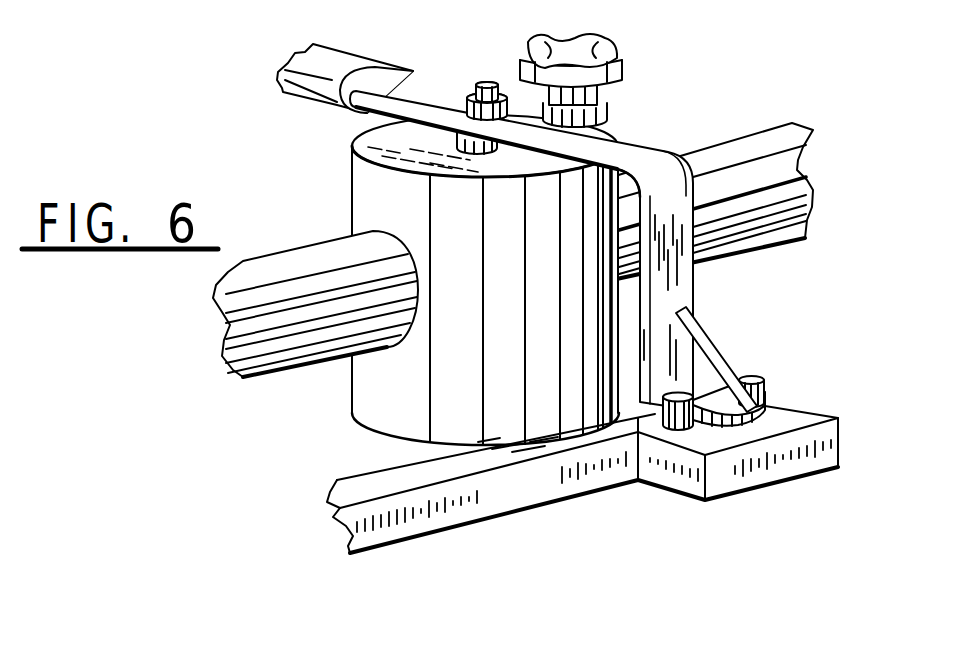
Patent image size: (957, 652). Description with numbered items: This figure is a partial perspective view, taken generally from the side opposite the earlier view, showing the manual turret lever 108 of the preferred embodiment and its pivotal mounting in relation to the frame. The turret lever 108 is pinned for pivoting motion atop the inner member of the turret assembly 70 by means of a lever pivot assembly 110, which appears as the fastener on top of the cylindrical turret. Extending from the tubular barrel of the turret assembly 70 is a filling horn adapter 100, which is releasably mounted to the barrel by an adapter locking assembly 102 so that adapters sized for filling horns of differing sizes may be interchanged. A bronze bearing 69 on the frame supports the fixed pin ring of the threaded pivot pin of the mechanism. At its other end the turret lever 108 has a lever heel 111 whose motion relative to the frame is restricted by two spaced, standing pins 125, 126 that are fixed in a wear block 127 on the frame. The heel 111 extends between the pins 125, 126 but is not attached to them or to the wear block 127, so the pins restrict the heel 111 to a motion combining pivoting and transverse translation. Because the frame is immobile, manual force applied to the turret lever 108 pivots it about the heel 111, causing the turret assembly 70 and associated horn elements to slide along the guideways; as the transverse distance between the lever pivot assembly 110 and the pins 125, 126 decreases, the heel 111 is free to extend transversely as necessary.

The bronze bearing 69 is at (273, 323).
The turret assembly 70 is at (390, 212).
The filling horn adapter 100 is at (740, 162).
The adapter locking assembly 102 is at (578, 47).
The turret lever 108 is at (633, 153).
The lever pivot assembly 110 is at (487, 82).
The lever heel 111 is at (699, 324).
The standing pin 125 is at (685, 396).
The standing pin 126 is at (766, 382).
The wear block 127 is at (727, 473).